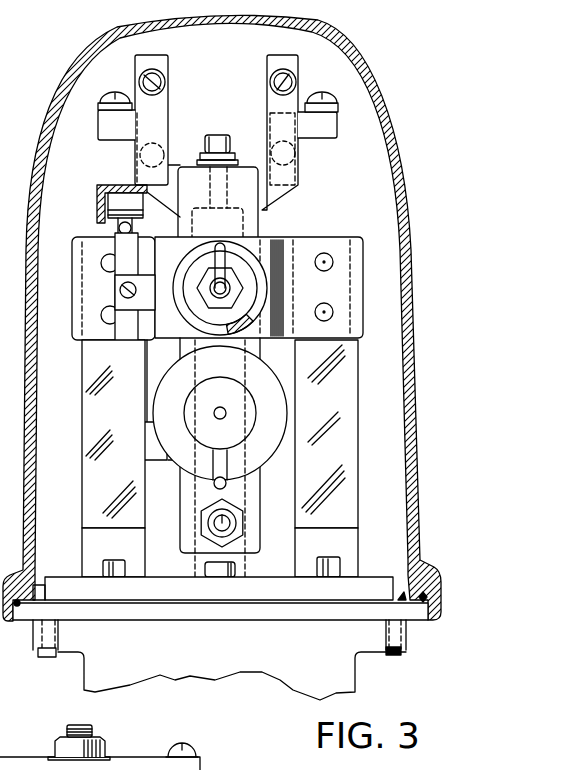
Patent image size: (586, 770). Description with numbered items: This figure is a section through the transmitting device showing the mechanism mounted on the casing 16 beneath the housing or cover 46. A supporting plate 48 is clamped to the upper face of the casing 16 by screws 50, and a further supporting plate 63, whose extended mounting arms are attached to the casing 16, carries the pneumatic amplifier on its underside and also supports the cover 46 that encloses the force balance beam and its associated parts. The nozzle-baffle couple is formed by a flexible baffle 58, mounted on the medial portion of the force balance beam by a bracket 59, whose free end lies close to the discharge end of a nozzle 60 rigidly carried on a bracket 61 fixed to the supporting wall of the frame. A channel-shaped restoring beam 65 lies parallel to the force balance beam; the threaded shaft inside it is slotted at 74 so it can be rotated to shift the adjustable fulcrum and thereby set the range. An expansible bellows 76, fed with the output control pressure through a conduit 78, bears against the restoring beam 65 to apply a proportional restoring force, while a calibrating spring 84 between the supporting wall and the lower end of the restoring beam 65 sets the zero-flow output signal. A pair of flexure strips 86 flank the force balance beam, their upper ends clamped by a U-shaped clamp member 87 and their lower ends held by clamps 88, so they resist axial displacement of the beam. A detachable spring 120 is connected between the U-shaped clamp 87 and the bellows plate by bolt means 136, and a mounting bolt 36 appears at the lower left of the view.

The casing 16 is at (356, 673).
The mounting bolt 36 is at (55, 747).
The housing or cover 46 is at (400, 180).
The supporting plate 48 is at (368, 580).
The screws 50 is at (240, 567).
The flexible baffle 58 is at (115, 390).
The bracket 59 is at (138, 463).
The nozzle 60 is at (118, 236).
The bracket 61 is at (143, 212).
The supporting plate 63 is at (420, 620).
The restoring beam 65 is at (180, 504).
The slot 74 is at (220, 133).
The expansible bellows 76 is at (270, 450).
The conduit 78 is at (238, 452).
The calibrating spring 84 is at (238, 514).
The flexure strips 86 is at (82, 468).
The U-shaped clamp member 87 is at (273, 237).
The clamps 88 is at (90, 542).
The spring 120 is at (265, 282).
The bolt means 136 is at (205, 308).